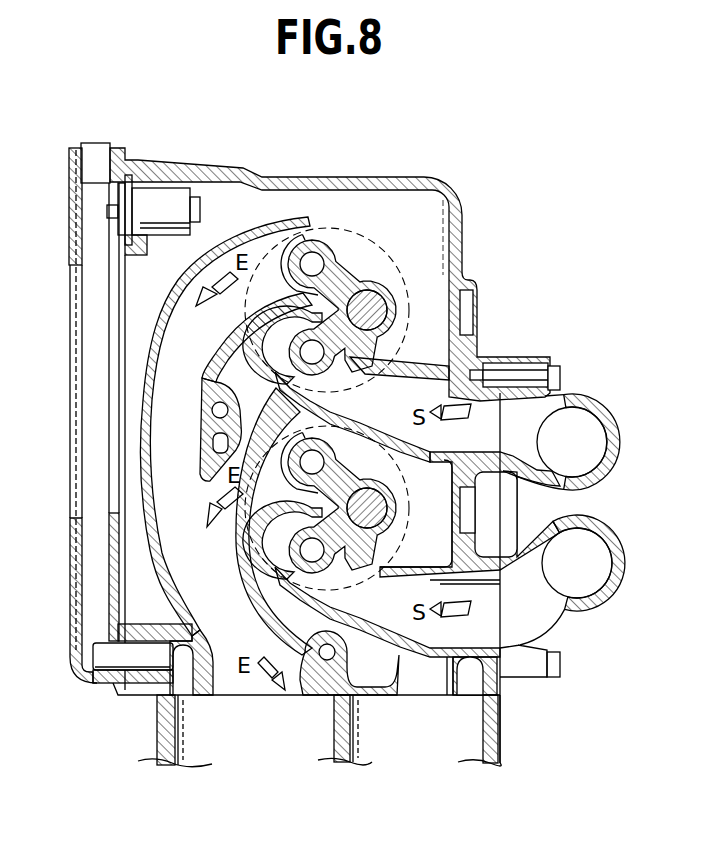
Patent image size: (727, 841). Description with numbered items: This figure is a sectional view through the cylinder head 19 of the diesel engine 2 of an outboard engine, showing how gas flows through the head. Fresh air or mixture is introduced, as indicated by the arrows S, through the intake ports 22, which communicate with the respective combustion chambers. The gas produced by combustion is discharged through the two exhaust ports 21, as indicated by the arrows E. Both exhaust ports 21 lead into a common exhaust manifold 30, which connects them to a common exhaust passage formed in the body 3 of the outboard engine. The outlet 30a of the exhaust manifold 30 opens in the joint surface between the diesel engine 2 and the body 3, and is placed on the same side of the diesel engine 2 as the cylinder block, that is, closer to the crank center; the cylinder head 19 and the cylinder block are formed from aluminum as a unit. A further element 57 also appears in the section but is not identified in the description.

The diesel engine 2 is at (500, 689).
The body of the outboard engine 3 is at (500, 751).
The cylinder head 19 is at (480, 693).
The exhaust ports 21 is at (312, 262).
The intake ports 22 is at (322, 352).
The exhaust manifold 30 is at (167, 523).
The outlet of the exhaust manifold 30a is at (258, 688).
The rocker shaft / bolt 57 is at (380, 296).